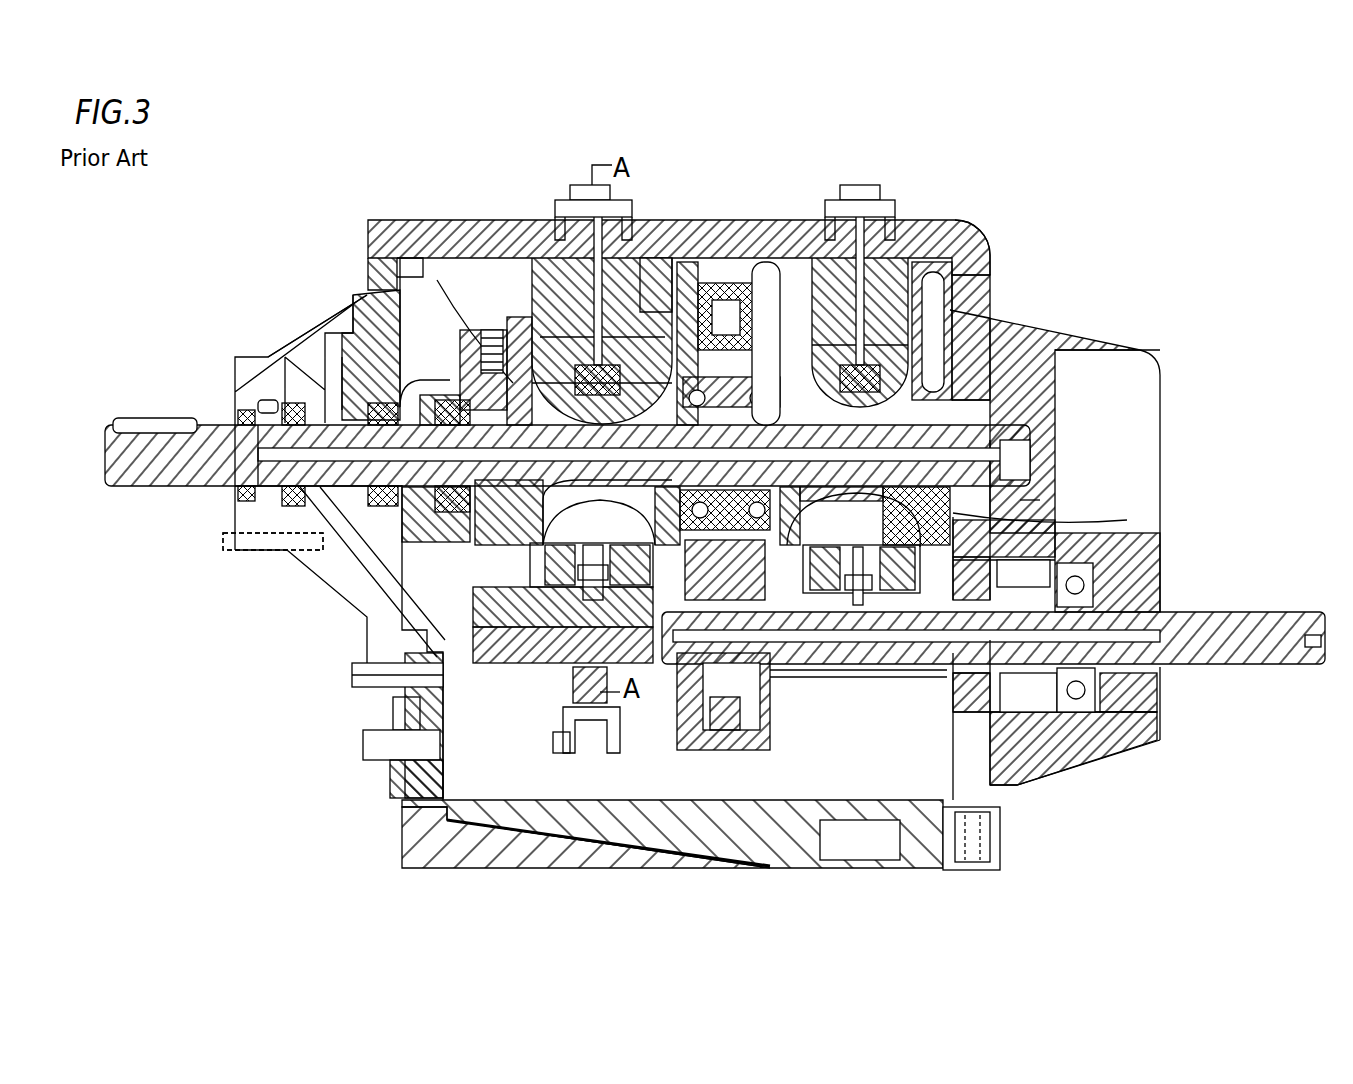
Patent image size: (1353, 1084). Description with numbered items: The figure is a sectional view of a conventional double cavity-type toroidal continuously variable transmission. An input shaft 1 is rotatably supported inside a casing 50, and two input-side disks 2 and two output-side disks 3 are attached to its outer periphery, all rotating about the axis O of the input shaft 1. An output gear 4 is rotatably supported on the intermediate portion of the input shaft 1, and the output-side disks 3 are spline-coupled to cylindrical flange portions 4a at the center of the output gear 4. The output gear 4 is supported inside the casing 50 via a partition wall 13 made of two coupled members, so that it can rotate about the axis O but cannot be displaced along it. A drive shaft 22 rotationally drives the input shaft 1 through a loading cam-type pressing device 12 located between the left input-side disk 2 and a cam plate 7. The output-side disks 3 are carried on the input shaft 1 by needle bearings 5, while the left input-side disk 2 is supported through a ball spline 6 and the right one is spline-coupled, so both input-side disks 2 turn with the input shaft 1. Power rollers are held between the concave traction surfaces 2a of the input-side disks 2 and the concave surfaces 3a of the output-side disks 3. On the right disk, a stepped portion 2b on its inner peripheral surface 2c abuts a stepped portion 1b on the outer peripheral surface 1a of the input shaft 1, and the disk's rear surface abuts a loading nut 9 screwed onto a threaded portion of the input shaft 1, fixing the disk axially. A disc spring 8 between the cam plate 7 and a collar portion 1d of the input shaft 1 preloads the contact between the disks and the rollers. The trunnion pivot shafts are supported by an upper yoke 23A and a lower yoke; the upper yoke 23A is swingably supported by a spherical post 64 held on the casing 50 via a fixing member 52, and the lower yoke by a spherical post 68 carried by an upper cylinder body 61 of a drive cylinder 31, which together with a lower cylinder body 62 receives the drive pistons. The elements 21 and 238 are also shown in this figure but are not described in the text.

The input shaft 1 is at (1045, 511).
The outer peripheral surface 1a is at (993, 570).
The stepped portion 1b is at (1010, 370).
The collar portion 1d is at (400, 510).
The input-side disk 2 is at (513, 307).
The inner surface (concave surface) of input-side disk 2a is at (442, 535).
The stepped portion 2b is at (997, 380).
The inner peripheral surface 2c is at (1007, 410).
The output-side disk 3 is at (713, 262).
The inner surface (concave surface) of output-side disk 3a is at (818, 355).
The output gear 4 is at (729, 290).
The cylindrical flange portion 4a is at (787, 672).
The needle bearing 5 is at (588, 510).
The ball spline 6 is at (463, 327).
The cam plate (loading cam) 7 is at (368, 293).
The disc spring 8 is at (420, 535).
The loading nut 9 is at (1040, 500).
The loading cam-type pressing device 12 is at (415, 258).
The partition wall 13 is at (712, 300).
The lower case 21 is at (1056, 712).
The drive shaft 22 is at (332, 345).
The upper yoke 23A is at (528, 262).
The drive cylinder (cylinder body) 31 is at (541, 732).
The casing 50 is at (960, 233).
The fixing member 52 is at (632, 260).
The upper cylinder body 61 is at (507, 667).
The lower cylinder body 62 is at (500, 700).
The spherical post 64 is at (790, 355).
The spherical post 68 is at (651, 667).
The bolt 238 is at (480, 603).
The axis O is at (1062, 444).